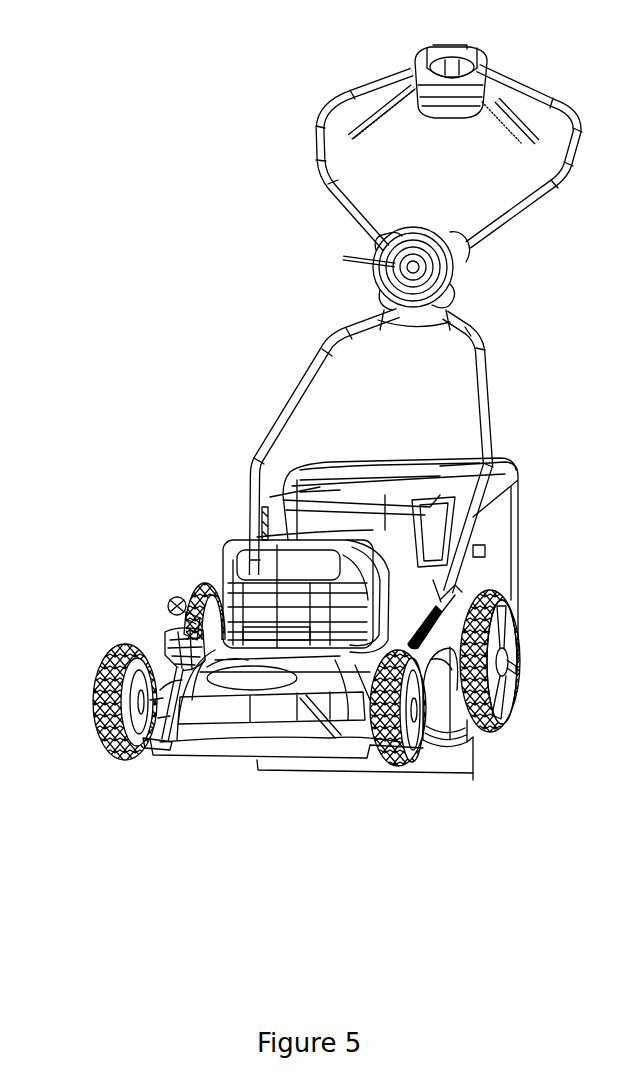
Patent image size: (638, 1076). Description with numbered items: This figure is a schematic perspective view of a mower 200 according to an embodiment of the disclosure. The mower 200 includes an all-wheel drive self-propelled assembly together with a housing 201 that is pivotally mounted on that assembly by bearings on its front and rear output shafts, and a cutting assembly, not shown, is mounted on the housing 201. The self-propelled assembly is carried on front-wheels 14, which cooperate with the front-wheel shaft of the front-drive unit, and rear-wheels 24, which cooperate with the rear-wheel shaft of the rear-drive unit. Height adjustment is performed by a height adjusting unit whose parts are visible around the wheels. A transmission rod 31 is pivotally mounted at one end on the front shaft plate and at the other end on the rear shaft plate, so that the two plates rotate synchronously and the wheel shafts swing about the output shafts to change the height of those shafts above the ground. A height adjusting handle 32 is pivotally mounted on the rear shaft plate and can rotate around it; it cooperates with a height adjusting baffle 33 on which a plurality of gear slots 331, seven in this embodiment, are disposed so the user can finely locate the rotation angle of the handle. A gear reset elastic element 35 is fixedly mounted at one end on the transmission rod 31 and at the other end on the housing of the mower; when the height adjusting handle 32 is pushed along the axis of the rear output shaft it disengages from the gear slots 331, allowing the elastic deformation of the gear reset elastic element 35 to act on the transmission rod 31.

The mower 200 is at (384, 48).
The housing 201 is at (280, 568).
The height adjusting handle 32 is at (168, 600).
The gear slots 331 is at (180, 632).
The height adjusting baffle 33 is at (187, 657).
The gear reset elastic element 35 is at (475, 590).
The rear-wheels 24 is at (518, 650).
The transmission rod 31 is at (514, 712).
The front-wheels 14 is at (473, 737).